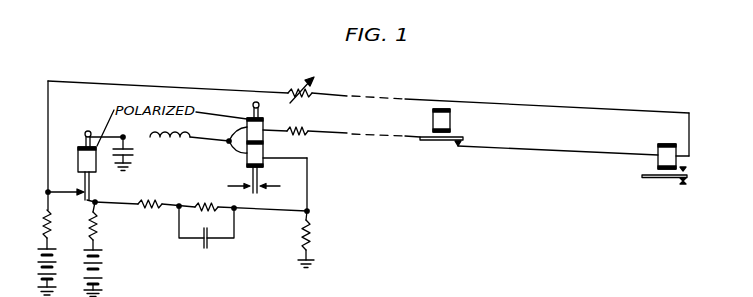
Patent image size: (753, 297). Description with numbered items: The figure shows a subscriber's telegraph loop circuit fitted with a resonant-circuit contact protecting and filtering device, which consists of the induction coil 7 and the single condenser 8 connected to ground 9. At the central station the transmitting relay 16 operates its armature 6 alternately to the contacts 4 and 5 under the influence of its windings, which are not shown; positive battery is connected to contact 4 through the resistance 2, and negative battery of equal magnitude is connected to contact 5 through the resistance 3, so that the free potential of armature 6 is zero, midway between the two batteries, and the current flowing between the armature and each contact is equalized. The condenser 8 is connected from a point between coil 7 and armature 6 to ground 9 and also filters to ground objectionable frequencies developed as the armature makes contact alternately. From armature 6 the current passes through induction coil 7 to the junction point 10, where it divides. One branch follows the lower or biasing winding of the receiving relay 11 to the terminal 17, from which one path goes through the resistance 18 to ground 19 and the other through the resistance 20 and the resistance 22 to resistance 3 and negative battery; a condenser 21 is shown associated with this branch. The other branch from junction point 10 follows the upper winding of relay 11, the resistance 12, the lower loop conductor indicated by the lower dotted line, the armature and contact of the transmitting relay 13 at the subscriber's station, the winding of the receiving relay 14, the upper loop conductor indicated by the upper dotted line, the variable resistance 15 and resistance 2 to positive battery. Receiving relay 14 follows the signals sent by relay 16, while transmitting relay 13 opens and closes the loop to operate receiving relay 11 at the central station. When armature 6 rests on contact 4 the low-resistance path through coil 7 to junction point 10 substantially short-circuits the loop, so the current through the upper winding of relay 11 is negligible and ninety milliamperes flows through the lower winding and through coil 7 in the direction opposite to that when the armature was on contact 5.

The resistance 2 is at (41, 215).
The resistance 3 is at (89, 217).
The contact 4 is at (83, 189).
The contact 5 is at (95, 199).
The armature 6 is at (85, 133).
The induction coil 7 is at (175, 146).
The condenser 8 is at (134, 152).
The ground 9 is at (128, 166).
The junction point 10 is at (229, 145).
The receiving relay 11 is at (259, 127).
The resistance 12 is at (298, 127).
The transmitting relay 13 is at (452, 118).
The receiving relay 14 is at (665, 146).
The variable resistance 15 is at (293, 90).
The transmitting relay 16 is at (78, 158).
The terminal 17 is at (309, 211).
The resistance 18 is at (313, 231).
The ground 19 is at (312, 265).
The resistance 20 is at (213, 199).
The condenser 21 is at (203, 247).
The resistance 22 is at (151, 196).